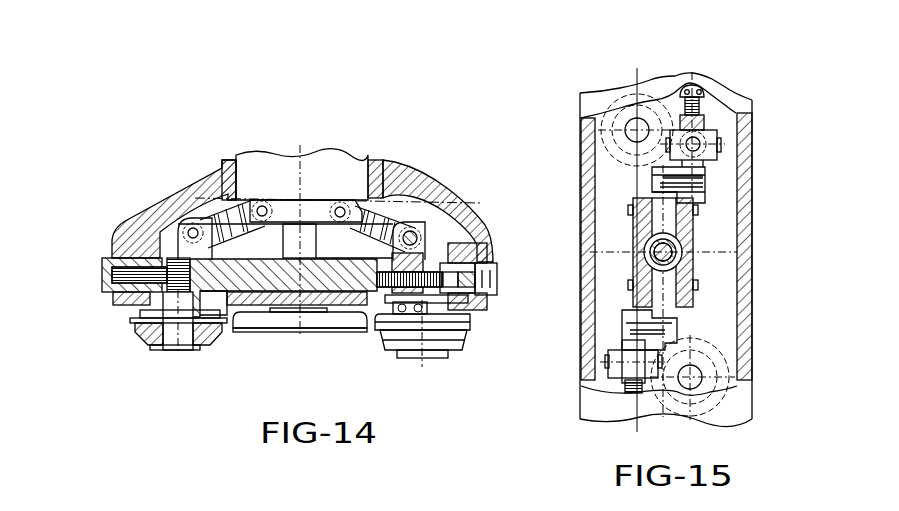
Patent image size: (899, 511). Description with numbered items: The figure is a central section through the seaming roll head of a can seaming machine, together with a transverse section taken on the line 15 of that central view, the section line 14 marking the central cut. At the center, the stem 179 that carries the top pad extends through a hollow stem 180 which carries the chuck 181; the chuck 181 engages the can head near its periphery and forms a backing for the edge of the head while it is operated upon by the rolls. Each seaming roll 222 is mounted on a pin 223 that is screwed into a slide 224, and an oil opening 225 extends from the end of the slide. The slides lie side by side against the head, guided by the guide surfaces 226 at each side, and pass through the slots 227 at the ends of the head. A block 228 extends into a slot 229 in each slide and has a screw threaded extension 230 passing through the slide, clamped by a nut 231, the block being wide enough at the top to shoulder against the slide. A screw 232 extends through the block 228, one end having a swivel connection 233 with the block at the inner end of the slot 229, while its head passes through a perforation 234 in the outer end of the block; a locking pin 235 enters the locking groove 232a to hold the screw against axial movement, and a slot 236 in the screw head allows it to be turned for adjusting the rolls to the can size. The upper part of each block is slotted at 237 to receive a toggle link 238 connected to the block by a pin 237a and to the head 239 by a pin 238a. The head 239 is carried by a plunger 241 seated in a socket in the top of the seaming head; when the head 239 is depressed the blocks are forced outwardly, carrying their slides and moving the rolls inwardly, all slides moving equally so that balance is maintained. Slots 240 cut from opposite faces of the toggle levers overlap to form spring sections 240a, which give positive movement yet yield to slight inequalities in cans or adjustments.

In FIG. 15, the section line 14 is at (633, 249).
In FIG. 14, the section line 15- 15 is at (195, 198).
In FIG. 15, the stem 179 is at (694, 268).
In FIG. 14, the hollow stem 180 is at (293, 243).
In FIG. 15, the hollow stem 180 is at (684, 256).
In FIG. 14, the chuck 181 is at (267, 318).
In FIG. 14, the seaming roll 222 is at (143, 338).
In FIG. 15, the seaming roll 222 is at (720, 410).
In FIG. 14, the pin 223 is at (183, 338).
In FIG. 15, the pin 223 is at (699, 379).
In FIG. 14, the slide 224 is at (115, 258).
In FIG. 14, the oil opening 225 is at (102, 290).
In FIG. 15, the guide surface 226 is at (745, 235).
In FIG. 14, the slot 227 is at (480, 300).
In FIG. 14, the block 228 is at (458, 253).
In FIG. 15, the block 228 is at (617, 368).
In FIG. 14, the slot 229 is at (437, 292).
In FIG. 14, the screw threaded extension 230 is at (412, 292).
In FIG. 14, the nut 231 is at (390, 318).
In FIG. 14, the screw 232 is at (486, 267).
In FIG. 15, the locking groove 232a is at (683, 88).
In FIG. 14, the swivel connection 233 is at (354, 250).
In FIG. 14, the perforation 234 is at (478, 280).
In FIG. 15, the locking pin 235 is at (705, 92).
In FIG. 14, the slot 236 is at (474, 280).
In FIG. 14, the slot 237 is at (420, 233).
In FIG. 14, the pin 237a is at (425, 231).
In FIG. 14, the toggle link 238 is at (372, 210).
In FIG. 14, the pin 238a is at (383, 170).
In FIG. 14, the head 239 is at (300, 212).
In FIG. 15, the head 239 is at (684, 228).
In FIG. 15, the slot 240 is at (705, 173).
In FIG. 15, the spring section 240a is at (663, 177).
In FIG. 14, the plunger 241 is at (270, 175).